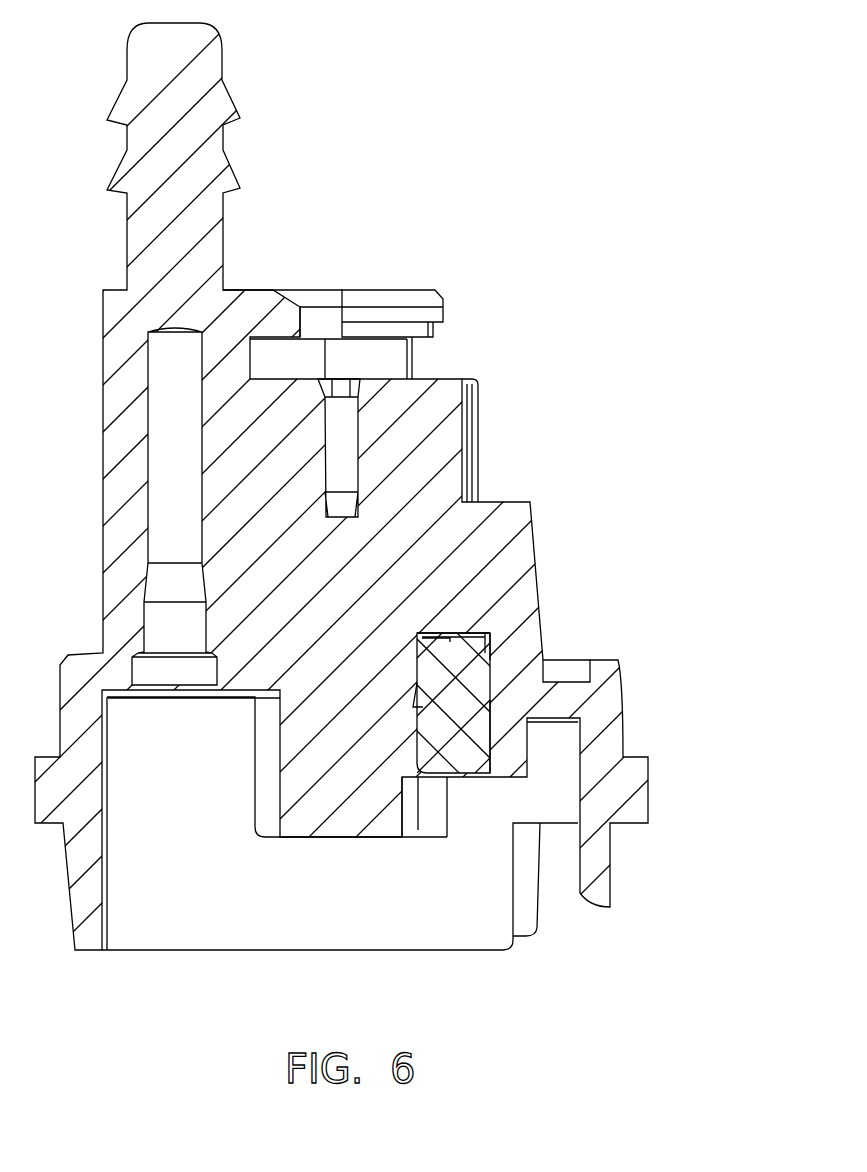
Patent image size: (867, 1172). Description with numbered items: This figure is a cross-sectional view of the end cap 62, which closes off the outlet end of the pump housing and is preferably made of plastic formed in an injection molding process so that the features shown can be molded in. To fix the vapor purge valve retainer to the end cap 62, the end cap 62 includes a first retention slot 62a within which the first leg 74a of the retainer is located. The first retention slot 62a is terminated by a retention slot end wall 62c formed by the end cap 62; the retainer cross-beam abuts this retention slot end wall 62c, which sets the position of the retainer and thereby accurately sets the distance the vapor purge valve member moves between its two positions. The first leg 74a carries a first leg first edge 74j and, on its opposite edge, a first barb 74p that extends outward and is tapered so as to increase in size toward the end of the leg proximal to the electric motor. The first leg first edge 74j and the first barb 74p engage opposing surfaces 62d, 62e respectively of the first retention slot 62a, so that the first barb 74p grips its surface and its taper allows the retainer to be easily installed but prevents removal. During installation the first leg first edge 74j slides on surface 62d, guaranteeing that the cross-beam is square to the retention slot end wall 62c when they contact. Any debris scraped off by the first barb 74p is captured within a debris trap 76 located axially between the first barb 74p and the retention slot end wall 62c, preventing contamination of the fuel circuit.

The end cap 62 is at (665, 86).
The first retention slot 62a is at (474, 776).
The retention slot end wall 62c is at (487, 683).
The surface of first retention slot 62d is at (492, 647).
The surface of first retention slot 62e is at (418, 712).
The first leg 74a is at (462, 715).
The first leg first edge 74j is at (500, 737).
The first barb 74p is at (417, 708).
The debris trap 76 is at (420, 633).